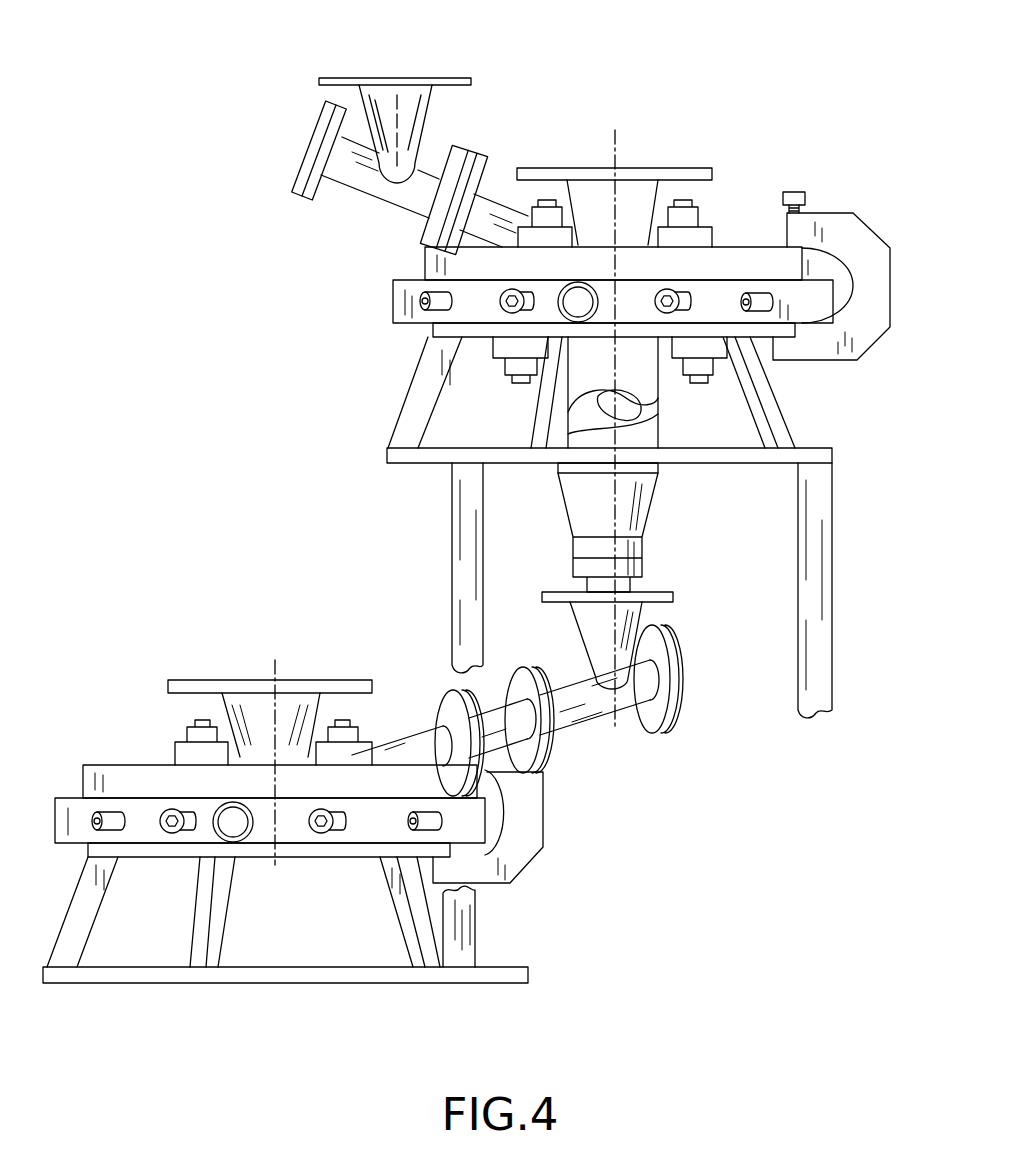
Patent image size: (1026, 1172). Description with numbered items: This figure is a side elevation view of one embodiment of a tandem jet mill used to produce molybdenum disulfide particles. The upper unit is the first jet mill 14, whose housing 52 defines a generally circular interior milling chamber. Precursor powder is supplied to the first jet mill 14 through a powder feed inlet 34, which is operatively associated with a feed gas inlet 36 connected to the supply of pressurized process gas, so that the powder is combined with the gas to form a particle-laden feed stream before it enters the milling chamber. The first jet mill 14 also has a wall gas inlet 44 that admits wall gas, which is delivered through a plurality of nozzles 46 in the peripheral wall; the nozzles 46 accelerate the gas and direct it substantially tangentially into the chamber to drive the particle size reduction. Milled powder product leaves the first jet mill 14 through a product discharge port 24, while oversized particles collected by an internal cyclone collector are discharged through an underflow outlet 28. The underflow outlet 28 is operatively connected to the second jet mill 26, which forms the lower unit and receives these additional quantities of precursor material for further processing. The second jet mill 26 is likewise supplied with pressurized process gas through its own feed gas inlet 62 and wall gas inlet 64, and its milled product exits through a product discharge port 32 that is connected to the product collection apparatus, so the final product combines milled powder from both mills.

The first jet mill 14 is at (387, 298).
The product discharge port 24 is at (686, 167).
The second jet mill 26 is at (100, 765).
The underflow outlet 28 is at (649, 517).
The product discharge port 32 is at (312, 680).
The powder feed inlet 34 is at (458, 78).
The feed gas inlet 36 is at (293, 183).
The wall gas inlet 44 is at (556, 290).
The nozzles 46 is at (501, 299).
The housing 52 is at (746, 247).
The feed gas inlet 62 is at (658, 718).
The wall gas inlet 64 is at (251, 840).